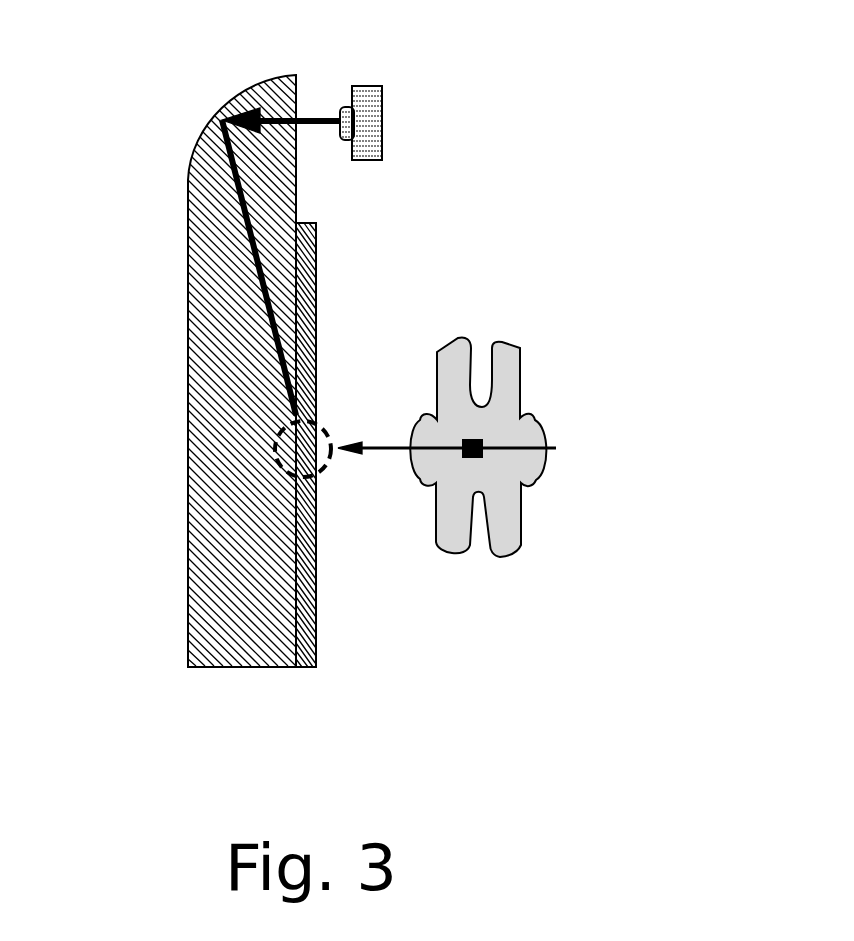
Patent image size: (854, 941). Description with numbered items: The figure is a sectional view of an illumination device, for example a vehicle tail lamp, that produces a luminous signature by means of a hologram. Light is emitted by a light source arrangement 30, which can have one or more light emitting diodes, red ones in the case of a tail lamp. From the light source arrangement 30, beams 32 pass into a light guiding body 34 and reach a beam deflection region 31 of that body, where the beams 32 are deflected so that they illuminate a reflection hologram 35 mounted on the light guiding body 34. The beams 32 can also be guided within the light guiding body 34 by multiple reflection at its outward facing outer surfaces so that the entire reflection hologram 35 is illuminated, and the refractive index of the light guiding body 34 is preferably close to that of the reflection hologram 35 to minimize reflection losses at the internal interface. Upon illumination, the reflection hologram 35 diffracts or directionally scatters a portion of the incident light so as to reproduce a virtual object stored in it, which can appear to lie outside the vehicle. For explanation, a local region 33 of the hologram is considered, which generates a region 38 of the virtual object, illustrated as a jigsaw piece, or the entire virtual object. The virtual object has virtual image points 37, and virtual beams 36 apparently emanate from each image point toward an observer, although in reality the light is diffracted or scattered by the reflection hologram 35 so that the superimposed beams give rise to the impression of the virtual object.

The light source arrangement 30 is at (364, 58).
The beam deflection region 31 is at (267, 58).
The beams 32 is at (217, 263).
The region 33 is at (247, 450).
The light guiding body 34 is at (230, 690).
The reflection hologram 35 is at (313, 695).
The virtual beams 36 is at (387, 483).
The virtual image points 37 is at (516, 457).
The region of the virtual object 38 is at (577, 446).